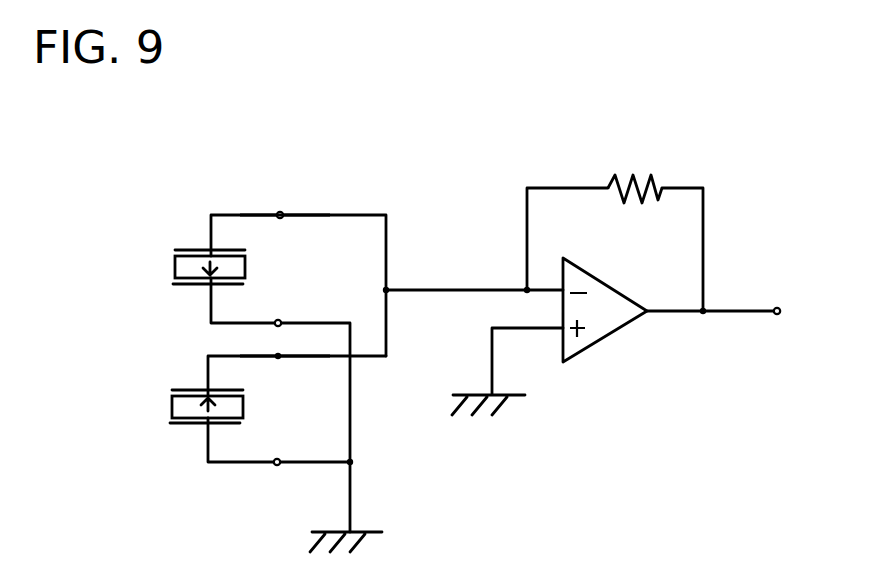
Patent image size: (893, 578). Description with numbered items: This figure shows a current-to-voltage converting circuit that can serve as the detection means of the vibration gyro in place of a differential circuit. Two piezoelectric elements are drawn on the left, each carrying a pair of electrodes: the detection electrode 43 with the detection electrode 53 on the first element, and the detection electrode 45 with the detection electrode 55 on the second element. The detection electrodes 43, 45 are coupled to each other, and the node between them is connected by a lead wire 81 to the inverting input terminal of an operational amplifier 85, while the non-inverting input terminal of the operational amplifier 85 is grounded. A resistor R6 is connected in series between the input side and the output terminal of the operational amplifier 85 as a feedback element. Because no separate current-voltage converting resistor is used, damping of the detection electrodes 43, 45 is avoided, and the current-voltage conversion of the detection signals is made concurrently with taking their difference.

The detection electrode 43 is at (197, 250).
The detection electrode 53 is at (195, 284).
The detection electrode 45 is at (197, 390).
The detection electrode 55 is at (193, 423).
The lead wire 81 is at (282, 212).
The operational amplifier 85 is at (587, 340).
The resistor R6 is at (639, 162).